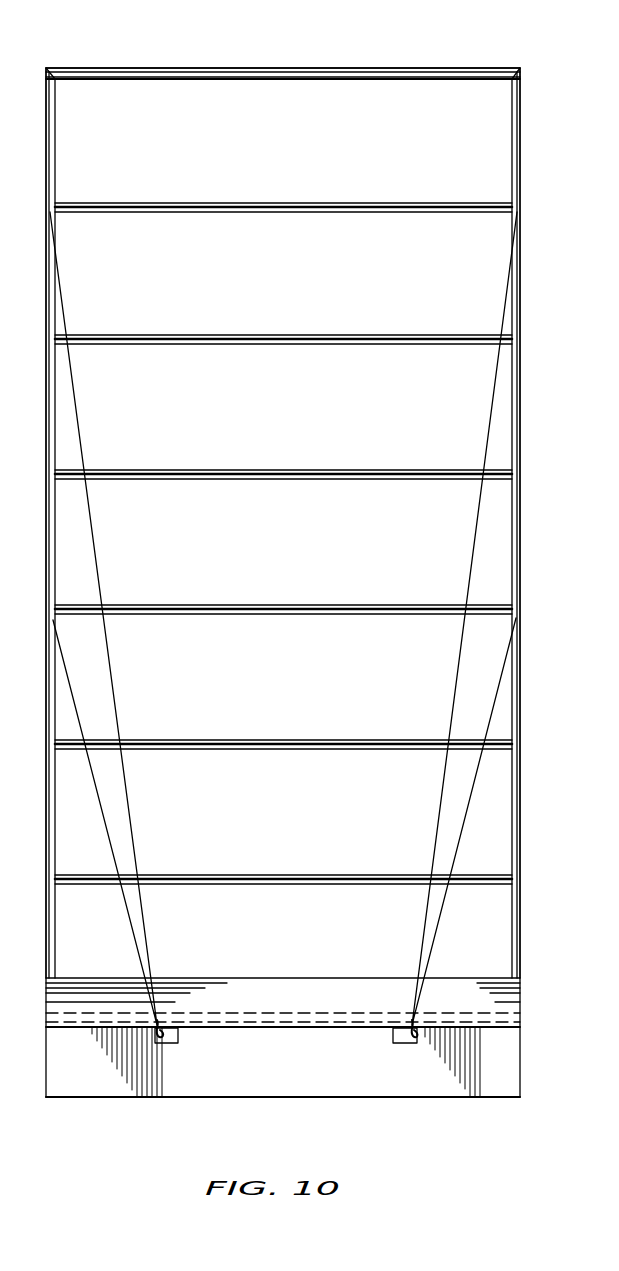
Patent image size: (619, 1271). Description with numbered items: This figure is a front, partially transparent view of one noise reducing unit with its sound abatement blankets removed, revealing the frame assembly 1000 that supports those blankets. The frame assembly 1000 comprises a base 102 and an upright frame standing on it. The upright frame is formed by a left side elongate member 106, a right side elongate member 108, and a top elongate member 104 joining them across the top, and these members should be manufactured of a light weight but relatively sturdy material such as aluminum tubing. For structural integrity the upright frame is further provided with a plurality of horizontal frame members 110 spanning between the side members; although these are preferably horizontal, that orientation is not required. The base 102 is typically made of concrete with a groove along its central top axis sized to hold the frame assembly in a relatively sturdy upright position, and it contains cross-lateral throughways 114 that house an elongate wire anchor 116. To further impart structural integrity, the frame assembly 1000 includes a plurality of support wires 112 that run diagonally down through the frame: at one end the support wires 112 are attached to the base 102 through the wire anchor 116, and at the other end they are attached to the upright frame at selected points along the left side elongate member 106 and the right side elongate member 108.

The frame assembly 1000 is at (284, 63).
The base 102 is at (505, 1070).
The top elongate member 104 is at (431, 68).
The left side elongate member 106 is at (48, 151).
The right side elongate member 108 is at (517, 150).
The horizontal frame members 110 is at (458, 335).
The support wires 112 is at (467, 814).
The cross-lateral throughways 114 is at (392, 1037).
The wire anchor 116 is at (400, 1043).